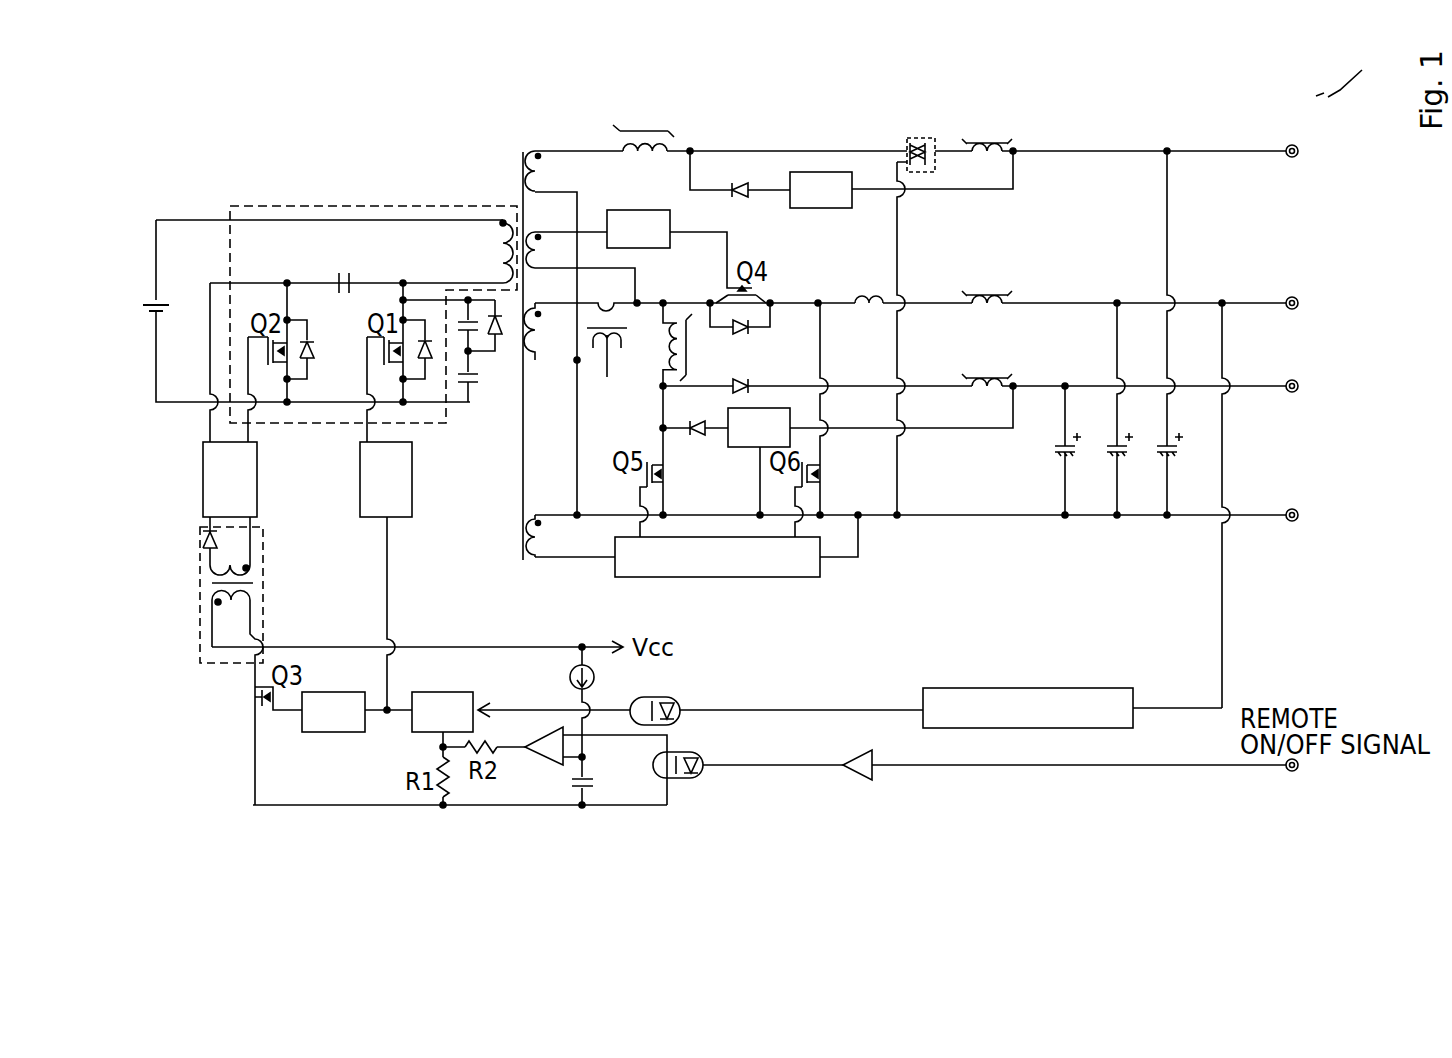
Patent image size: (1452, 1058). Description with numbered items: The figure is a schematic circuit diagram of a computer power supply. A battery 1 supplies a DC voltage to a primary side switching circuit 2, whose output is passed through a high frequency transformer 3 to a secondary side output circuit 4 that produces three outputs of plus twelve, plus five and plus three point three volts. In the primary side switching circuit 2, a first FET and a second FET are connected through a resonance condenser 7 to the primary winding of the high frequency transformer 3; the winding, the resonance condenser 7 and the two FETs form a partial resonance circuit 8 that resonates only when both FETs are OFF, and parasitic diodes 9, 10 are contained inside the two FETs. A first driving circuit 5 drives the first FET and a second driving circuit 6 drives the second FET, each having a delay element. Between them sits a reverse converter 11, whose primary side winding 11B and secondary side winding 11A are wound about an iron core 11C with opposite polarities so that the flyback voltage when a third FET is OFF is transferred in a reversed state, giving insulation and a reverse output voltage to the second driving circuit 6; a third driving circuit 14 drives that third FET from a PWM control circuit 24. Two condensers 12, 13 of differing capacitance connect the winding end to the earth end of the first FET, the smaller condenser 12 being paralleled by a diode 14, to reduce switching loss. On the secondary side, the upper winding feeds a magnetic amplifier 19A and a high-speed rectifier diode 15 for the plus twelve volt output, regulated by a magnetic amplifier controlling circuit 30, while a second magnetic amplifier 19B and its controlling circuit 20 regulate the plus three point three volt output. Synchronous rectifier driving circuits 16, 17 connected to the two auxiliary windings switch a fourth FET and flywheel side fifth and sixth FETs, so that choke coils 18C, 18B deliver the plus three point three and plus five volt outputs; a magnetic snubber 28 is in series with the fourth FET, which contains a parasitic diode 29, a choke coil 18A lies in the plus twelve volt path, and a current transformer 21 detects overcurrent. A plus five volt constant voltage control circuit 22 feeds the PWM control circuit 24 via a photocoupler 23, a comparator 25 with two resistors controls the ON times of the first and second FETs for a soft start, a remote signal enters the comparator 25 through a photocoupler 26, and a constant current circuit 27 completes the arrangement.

The battery 1 is at (163, 303).
The primary side switching circuit 2 is at (336, 143).
The high frequency transformer 3 is at (493, 163).
The secondary side output circuit 4 is at (802, 90).
The first driving circuit 5 is at (360, 467).
The second driving circuit 6 is at (203, 475).
The resonance condenser 7 is at (340, 278).
The partial resonance circuit 8 is at (264, 206).
The parasitic diode 9 is at (435, 350).
The parasitic diode 10 is at (310, 352).
The reverse converter 11 is at (241, 661).
The secondary side winding 11A is at (253, 553).
The primary side winding 11B is at (253, 607).
The iron core 11C is at (212, 583).
The condenser 12 is at (461, 322).
The condenser 13 is at (470, 392).
The diode / third driving circuit 14 is at (500, 333).
The high-speed rectifier diode 15 is at (924, 138).
The first synchronous rectifier driving circuit 16 is at (636, 210).
The second synchronous rectifier driving circuit 17 is at (803, 577).
The choke coil 18A is at (1018, 138).
The choke coil 18B is at (1016, 290).
The choke coil 18C is at (1016, 373).
The magnetic amplifier 19A is at (659, 118).
The magnetic amplifier 19B is at (708, 362).
The magnetic amplifier controlling circuit 20 is at (738, 448).
The current transformer 21 is at (633, 378).
The +5V constant voltage control circuit 22 is at (1093, 688).
The photocoupler 23 is at (680, 697).
The PWM control circuit 24 is at (461, 692).
The comparator 25 is at (547, 730).
The photocoupler 26 is at (706, 748).
The constant current circuit 27 is at (596, 674).
The magnetic snubber 28 is at (856, 276).
The parasitic diode 29 is at (738, 318).
The magnetic amplifier controlling circuit 30 is at (839, 172).